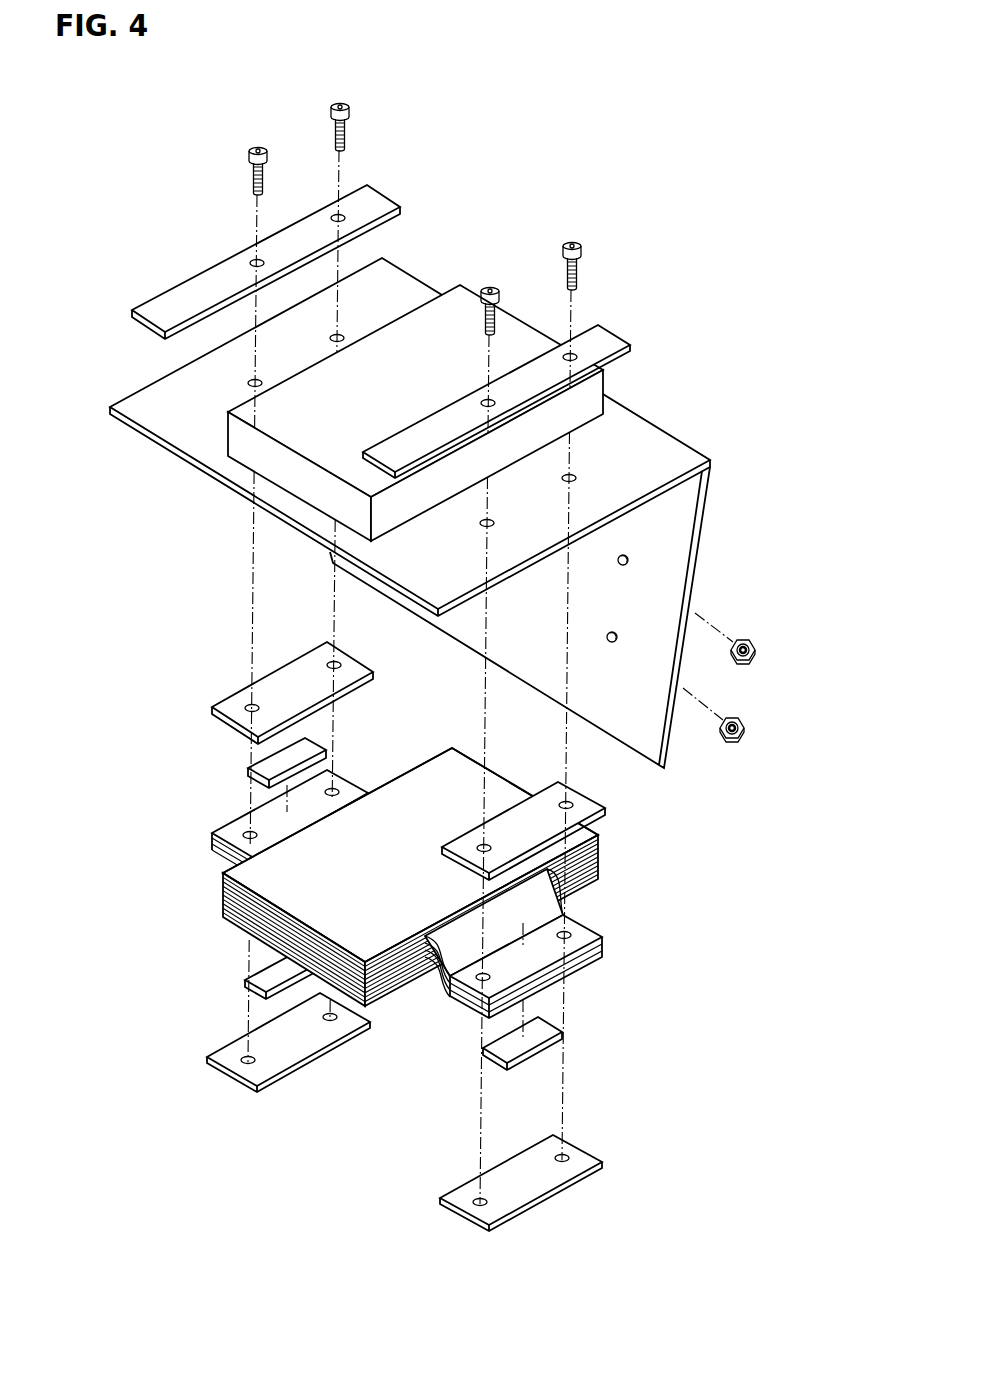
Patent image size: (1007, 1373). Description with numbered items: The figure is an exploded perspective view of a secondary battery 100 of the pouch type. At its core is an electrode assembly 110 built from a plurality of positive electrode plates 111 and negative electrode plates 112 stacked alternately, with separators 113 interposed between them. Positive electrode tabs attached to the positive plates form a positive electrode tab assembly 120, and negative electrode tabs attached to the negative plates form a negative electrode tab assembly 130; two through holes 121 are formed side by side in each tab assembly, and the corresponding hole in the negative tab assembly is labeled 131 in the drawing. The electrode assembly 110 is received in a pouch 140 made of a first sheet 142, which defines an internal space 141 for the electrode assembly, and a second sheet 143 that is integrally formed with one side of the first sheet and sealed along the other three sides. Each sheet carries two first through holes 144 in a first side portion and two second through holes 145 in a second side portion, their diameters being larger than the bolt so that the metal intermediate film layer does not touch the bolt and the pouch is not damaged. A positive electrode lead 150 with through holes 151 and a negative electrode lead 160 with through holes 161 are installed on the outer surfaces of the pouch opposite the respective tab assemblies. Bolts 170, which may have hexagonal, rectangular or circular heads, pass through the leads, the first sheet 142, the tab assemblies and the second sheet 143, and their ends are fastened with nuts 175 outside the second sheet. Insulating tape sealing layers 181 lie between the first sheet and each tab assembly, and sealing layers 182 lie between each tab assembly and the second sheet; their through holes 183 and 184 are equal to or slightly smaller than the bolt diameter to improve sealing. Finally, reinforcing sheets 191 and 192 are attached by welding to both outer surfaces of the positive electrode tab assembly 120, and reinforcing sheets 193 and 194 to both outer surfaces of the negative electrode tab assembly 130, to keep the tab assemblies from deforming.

The secondary battery 100 is at (675, 180).
The electrode assembly 110 is at (355, 877).
The positive electrode plates 111 is at (226, 878).
The negative electrode plates 112 is at (222, 896).
The separators 113 is at (222, 888).
The positive electrode tab assembly 120 is at (531, 953).
The through holes 121 is at (568, 932).
The negative electrode tab assembly 130 is at (264, 821).
The coupling hole of first electrode tab 131 is at (246, 835).
The pouch 140 is at (418, 513).
The internal space 141 is at (250, 453).
The first sheet 142 is at (153, 407).
The second sheet 143 is at (682, 556).
The first through holes 144 is at (626, 556).
The second through holes 145 is at (247, 386).
The positive electrode lead 150 is at (527, 375).
The through holes 151 is at (574, 354).
The negative electrode lead 160 is at (261, 262).
The through holes 161 is at (256, 261).
The bolts 170 is at (260, 149).
The nuts 175 is at (757, 647).
The sealing layers 181 is at (416, 761).
The sealing layers 182 is at (414, 1112).
The through holes 183 is at (244, 710).
The through holes 184 is at (242, 1063).
The reinforcing sheet 191 is at (492, 918).
The reinforcing sheet 192 is at (542, 1027).
The reinforcing sheet 193 is at (308, 752).
The reinforcing sheet 194 is at (268, 973).